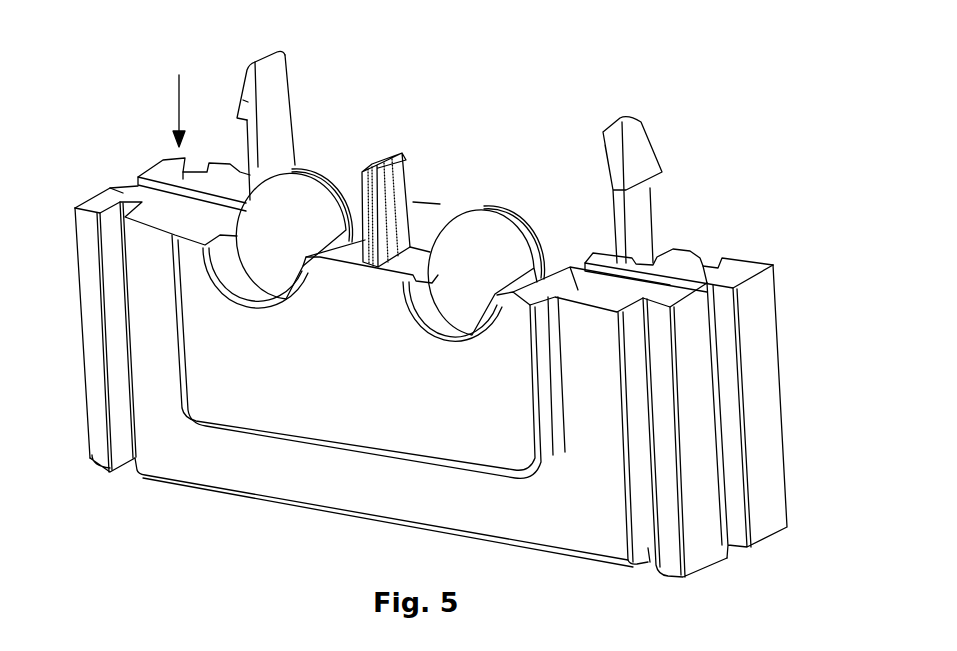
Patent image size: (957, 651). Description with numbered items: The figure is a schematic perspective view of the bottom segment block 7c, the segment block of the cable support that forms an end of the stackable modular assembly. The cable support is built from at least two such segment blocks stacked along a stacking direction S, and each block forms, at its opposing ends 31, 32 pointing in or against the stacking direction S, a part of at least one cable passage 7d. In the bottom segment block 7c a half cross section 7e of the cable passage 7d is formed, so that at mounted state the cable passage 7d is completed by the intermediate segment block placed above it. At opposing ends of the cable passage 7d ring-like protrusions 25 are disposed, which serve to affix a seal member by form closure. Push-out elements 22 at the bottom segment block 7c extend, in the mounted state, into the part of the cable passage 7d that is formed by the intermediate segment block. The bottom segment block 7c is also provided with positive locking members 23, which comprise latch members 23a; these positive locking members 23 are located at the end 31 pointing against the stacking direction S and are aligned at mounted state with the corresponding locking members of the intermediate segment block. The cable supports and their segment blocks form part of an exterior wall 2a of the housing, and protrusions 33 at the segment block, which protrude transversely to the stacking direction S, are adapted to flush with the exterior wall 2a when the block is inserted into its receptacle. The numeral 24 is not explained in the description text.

The exterior wall 2a is at (447, 442).
The bottom segment block 7c is at (458, 178).
The cable passage 7d is at (242, 275).
The half cross section 7e is at (350, 190).
The push-out element 22 is at (226, 212).
The positive locking member 23 is at (284, 140).
The latch member 23a is at (245, 103).
The support post 24 is at (183, 163).
The ring-like protrusion 25 is at (276, 312).
The end 31 is at (102, 200).
The end 32 is at (100, 476).
The protrusion 33 is at (648, 552).
The stacking direction S is at (177, 104).